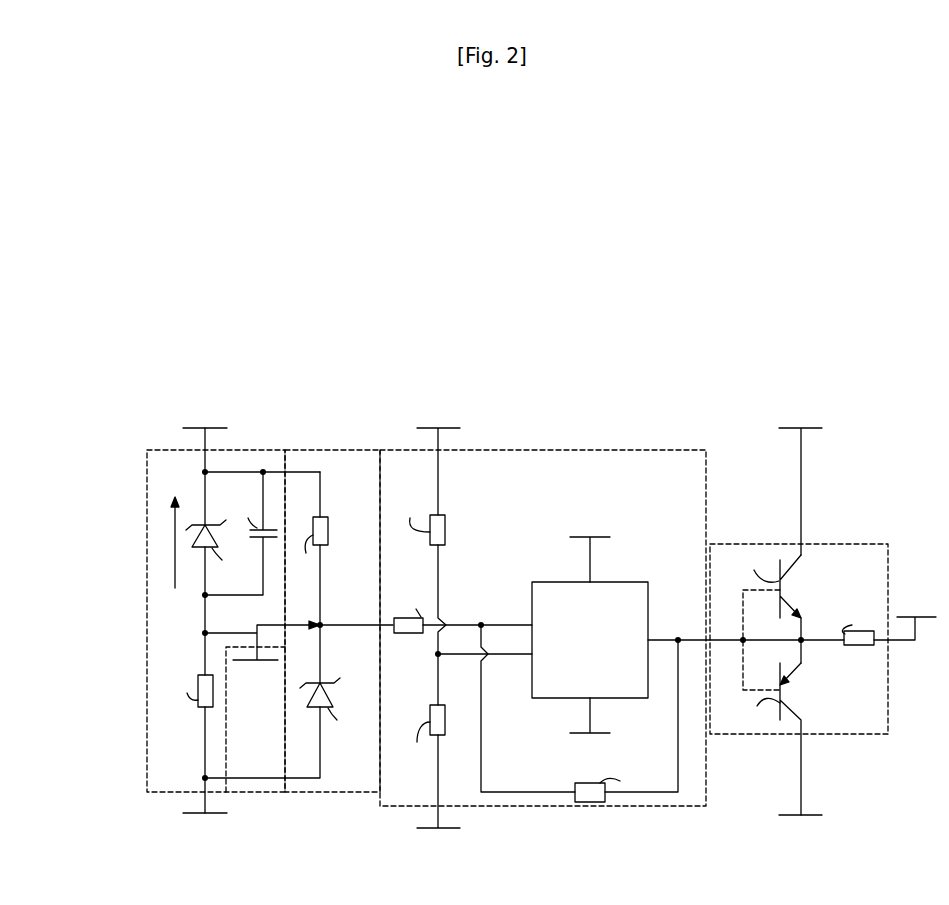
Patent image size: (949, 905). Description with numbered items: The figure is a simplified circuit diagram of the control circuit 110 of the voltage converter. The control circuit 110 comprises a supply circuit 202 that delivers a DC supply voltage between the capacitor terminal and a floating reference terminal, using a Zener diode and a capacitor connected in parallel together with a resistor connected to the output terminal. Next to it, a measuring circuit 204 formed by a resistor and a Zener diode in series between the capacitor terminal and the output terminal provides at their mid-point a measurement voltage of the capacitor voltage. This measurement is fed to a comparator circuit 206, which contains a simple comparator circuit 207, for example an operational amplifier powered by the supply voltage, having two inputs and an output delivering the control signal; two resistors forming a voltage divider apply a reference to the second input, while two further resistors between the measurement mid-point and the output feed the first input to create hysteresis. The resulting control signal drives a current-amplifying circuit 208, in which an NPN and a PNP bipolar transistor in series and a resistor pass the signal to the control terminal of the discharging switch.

The control circuit 110 is at (744, 331).
The supply circuit 202 is at (147, 507).
The measuring circuit 204 is at (367, 450).
The comparator circuit 206 is at (577, 450).
The simple comparator circuit 207 is at (576, 650).
The current-amplifying circuit 208 is at (822, 544).